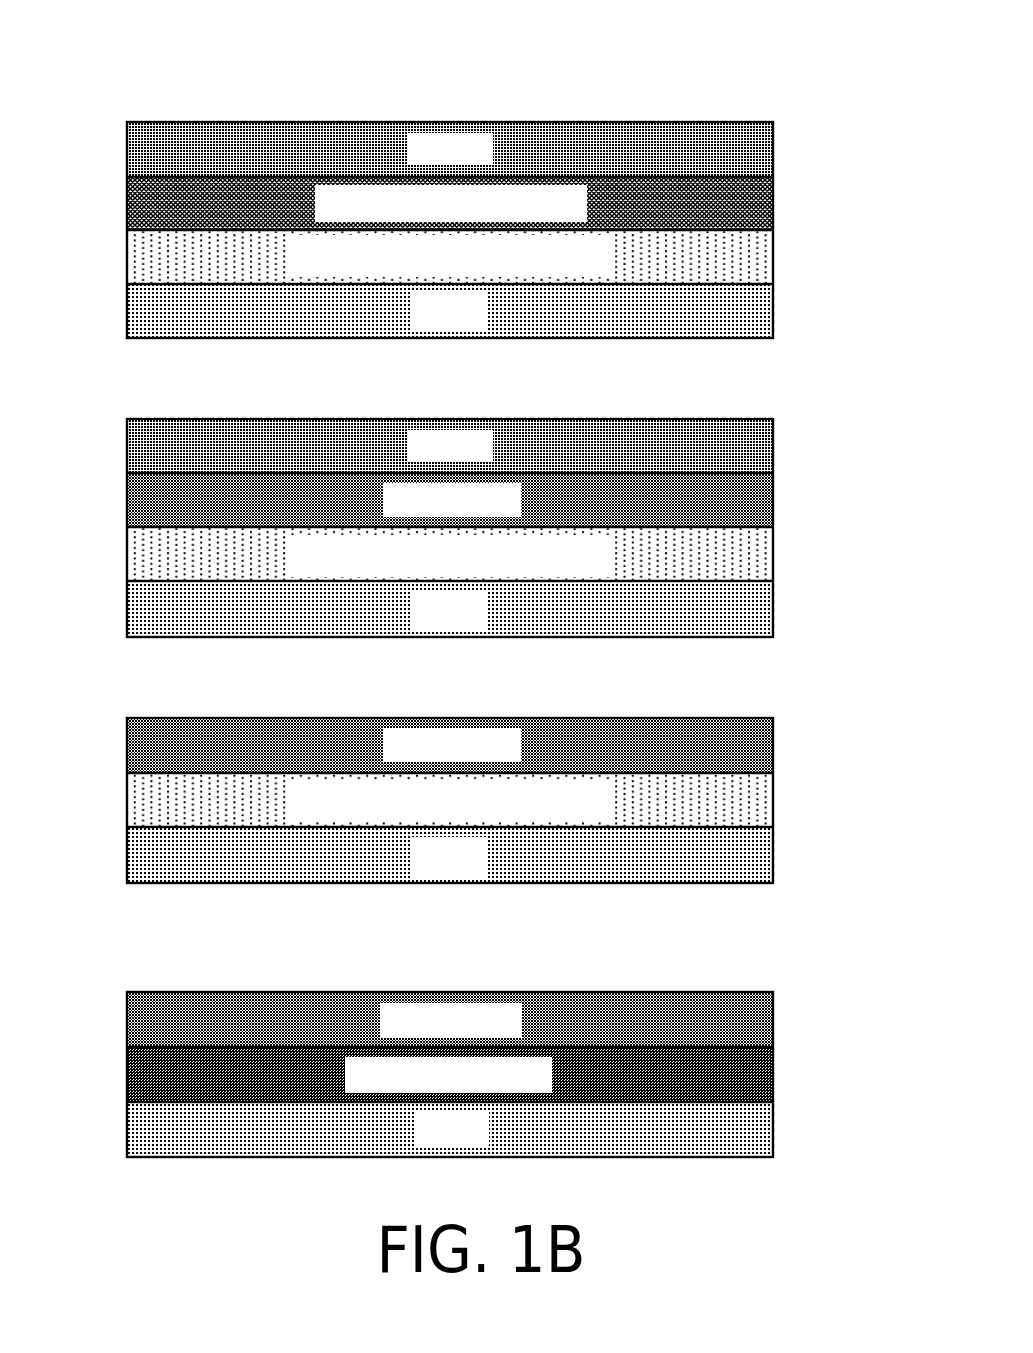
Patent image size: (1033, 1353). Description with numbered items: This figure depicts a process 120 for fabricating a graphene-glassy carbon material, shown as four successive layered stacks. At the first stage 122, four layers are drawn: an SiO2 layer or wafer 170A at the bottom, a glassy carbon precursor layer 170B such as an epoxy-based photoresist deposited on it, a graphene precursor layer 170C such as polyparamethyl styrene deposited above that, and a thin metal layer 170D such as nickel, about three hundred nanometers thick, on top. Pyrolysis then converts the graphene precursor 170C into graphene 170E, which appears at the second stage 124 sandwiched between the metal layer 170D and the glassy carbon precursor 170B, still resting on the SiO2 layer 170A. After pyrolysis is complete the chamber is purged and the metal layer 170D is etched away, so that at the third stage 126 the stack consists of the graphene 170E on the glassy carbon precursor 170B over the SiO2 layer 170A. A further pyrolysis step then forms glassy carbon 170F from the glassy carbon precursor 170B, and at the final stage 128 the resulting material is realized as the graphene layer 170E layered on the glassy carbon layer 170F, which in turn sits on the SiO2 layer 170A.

The process 120 is at (473, 89).
The four-layer stack stage 122 is at (127, 230).
The graphene formation stage 124 is at (127, 527).
The metal-etched stage 126 is at (127, 800).
The glassy carbon formation stage 128 is at (127, 1075).
The SiO2 layer 170A is at (773, 312).
The glassy carbon precursor layer 170B is at (773, 258).
The graphene precursor layer 170C is at (773, 203).
The metal layer 170D is at (773, 151).
The graphene layer 170E is at (773, 500).
The glassy carbon layer 170F is at (773, 1073).